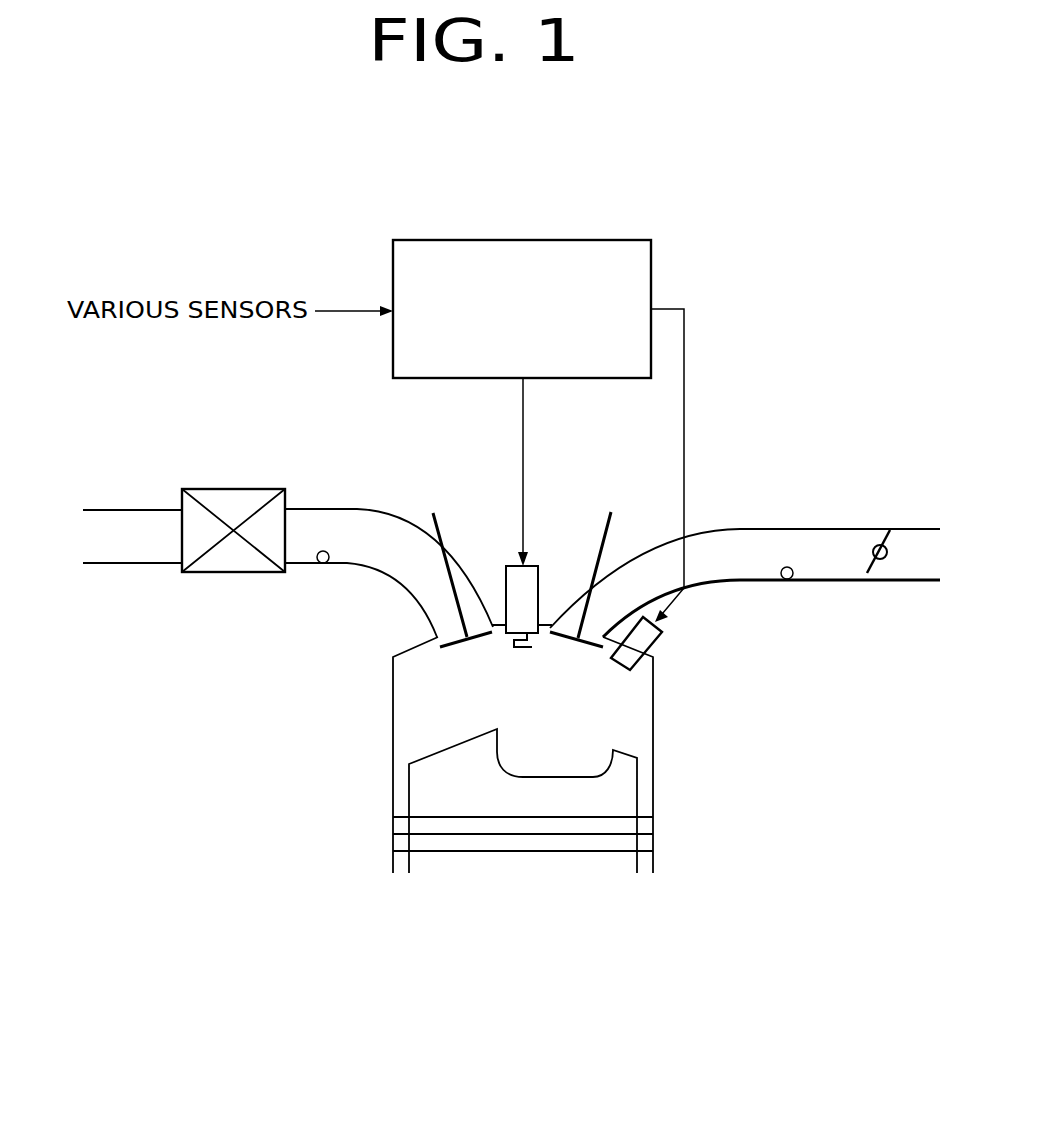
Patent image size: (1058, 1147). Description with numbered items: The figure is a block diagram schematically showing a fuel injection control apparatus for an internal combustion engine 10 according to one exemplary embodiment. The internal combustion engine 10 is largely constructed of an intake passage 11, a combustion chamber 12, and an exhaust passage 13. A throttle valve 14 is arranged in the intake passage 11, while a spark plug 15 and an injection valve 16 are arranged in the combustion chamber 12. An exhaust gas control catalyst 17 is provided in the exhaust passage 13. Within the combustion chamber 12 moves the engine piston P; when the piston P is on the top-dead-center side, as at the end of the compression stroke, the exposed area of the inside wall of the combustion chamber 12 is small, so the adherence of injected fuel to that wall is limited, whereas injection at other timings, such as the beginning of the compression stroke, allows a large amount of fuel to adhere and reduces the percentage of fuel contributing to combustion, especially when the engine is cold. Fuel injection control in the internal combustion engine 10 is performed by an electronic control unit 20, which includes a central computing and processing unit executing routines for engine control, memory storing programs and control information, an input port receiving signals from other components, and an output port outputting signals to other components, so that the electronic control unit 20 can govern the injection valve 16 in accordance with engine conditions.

The internal combustion engine 10 is at (292, 814).
The intake passage 11 is at (788, 579).
The combustion chamber 12 is at (490, 695).
The exhaust passage 13 is at (325, 563).
The throttle valve 14 is at (888, 530).
The spark plug 15 is at (539, 580).
The injection valve 16 is at (660, 637).
The exhaust gas control catalyst 17 is at (215, 572).
The electronic control unit 20 is at (432, 380).
The piston P is at (498, 778).